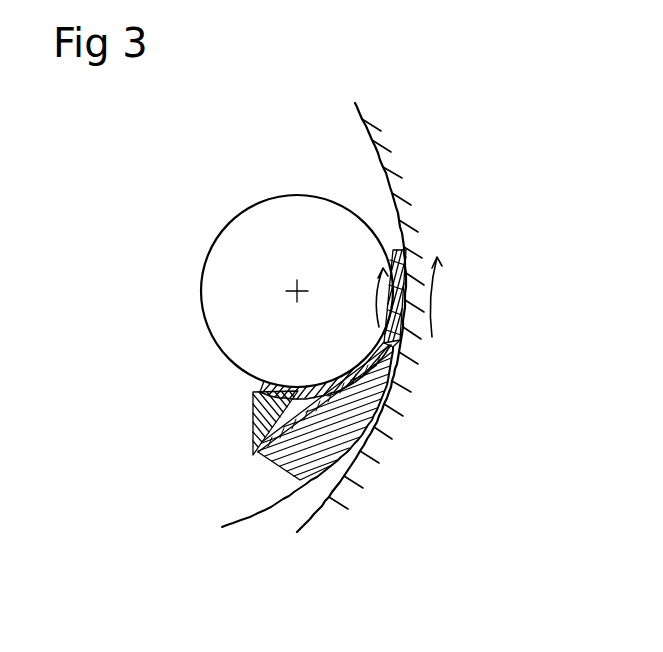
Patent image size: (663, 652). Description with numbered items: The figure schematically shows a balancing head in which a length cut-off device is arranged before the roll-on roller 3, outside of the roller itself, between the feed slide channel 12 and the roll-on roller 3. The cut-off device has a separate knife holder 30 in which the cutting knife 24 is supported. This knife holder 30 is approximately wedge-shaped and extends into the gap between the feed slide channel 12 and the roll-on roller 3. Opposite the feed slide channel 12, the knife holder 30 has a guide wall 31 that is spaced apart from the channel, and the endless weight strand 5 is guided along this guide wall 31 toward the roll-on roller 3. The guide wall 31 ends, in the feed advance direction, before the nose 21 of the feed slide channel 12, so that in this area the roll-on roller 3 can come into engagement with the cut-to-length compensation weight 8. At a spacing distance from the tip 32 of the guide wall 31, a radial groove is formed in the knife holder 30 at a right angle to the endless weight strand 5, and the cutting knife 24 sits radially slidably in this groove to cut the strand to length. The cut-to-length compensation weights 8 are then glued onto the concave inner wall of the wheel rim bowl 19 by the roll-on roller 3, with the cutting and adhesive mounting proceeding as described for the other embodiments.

The roll-on roller 3 is at (227, 255).
The wheel rim bowl 19 is at (378, 153).
The cut-to-length compensation weight 8 is at (408, 292).
The nose 21 is at (393, 347).
The knife holder 30 is at (260, 395).
The cutting knife 24 is at (255, 415).
The endless weight strand 5 is at (295, 459).
The tip of the guide wall 32 is at (365, 372).
The guide wall 31 is at (330, 434).
The feed slide channel 12 is at (310, 457).